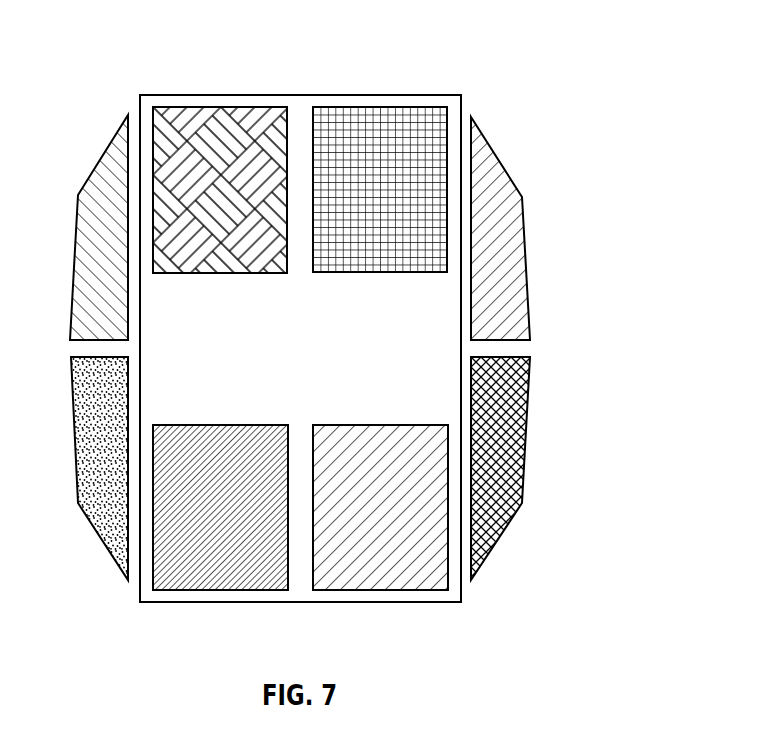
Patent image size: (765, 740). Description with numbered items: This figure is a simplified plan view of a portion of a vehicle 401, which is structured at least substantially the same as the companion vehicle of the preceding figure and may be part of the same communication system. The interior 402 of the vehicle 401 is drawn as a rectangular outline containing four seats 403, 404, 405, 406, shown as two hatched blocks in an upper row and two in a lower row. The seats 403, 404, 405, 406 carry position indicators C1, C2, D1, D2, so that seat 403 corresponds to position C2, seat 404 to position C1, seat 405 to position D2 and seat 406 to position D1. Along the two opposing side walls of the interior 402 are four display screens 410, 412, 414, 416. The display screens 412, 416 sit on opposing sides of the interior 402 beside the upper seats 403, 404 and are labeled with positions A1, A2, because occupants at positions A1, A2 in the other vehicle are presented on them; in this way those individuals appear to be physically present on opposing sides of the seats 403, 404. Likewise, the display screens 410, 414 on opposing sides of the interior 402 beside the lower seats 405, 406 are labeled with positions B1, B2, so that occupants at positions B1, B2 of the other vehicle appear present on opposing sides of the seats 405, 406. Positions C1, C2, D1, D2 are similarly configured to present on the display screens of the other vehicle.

The vehicle 401 is at (423, 331).
The interior 402 is at (595, 348).
The seat 403 is at (386, 159).
The seat 404 is at (230, 160).
The seat 405 is at (390, 541).
The seat 406 is at (214, 541).
The display screen 410 is at (531, 468).
The display screen 412 is at (534, 228).
The display screen 414 is at (66, 468).
The display screen 416 is at (66, 227).
The position indicator A1 is at (90, 243).
The position indicator A2 is at (510, 242).
The position indicator B1 is at (82, 487).
The position indicator B2 is at (508, 446).
The position indicator C1 is at (199, 124).
The position indicator C2 is at (357, 125).
The position indicator D1 is at (213, 578).
The position indicator D2 is at (355, 578).